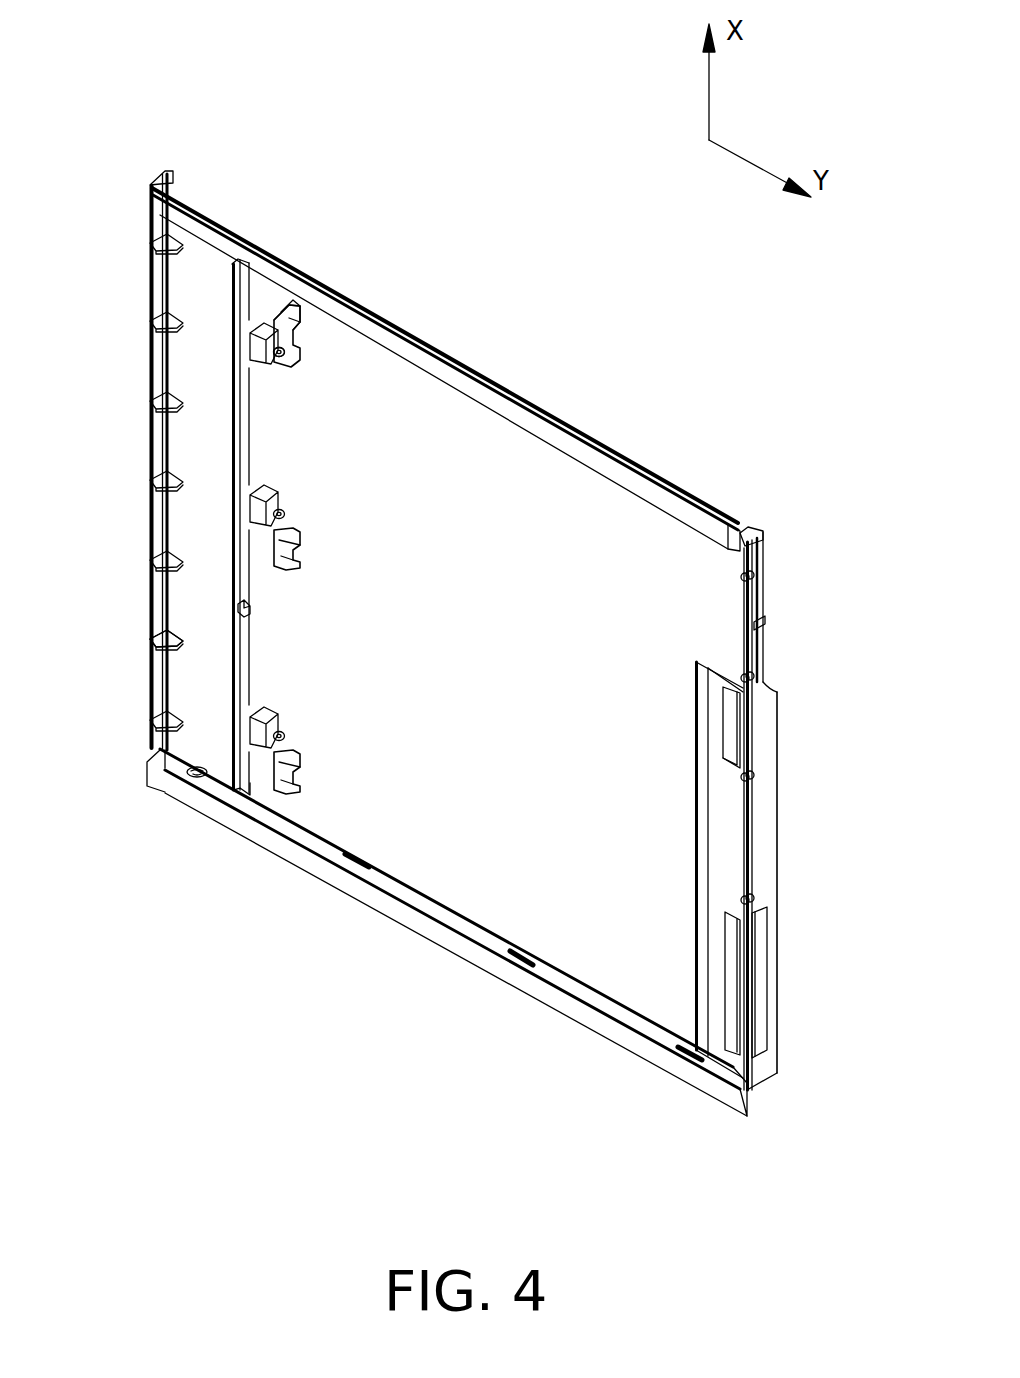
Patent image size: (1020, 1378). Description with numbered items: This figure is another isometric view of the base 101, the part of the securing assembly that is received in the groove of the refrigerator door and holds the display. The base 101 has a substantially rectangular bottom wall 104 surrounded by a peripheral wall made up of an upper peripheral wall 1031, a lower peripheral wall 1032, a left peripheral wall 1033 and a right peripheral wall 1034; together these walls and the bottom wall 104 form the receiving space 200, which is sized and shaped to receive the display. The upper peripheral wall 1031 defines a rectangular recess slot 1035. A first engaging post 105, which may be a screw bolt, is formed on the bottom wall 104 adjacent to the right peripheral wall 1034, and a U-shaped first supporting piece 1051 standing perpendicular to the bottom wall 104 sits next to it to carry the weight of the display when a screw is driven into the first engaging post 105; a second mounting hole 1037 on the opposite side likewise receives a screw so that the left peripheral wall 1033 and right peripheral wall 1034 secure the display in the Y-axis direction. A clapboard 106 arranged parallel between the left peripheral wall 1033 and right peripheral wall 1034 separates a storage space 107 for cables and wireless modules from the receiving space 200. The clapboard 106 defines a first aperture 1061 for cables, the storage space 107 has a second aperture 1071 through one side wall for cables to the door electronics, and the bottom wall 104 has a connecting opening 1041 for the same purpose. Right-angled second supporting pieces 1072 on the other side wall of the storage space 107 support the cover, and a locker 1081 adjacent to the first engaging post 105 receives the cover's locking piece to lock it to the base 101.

The base 101 is at (265, 57).
The bottom wall 104 is at (633, 527).
The first engaging post 105 is at (298, 358).
The clapboard 106 is at (233, 374).
The storage space 107 is at (200, 447).
The receiving space 200 is at (466, 428).
The upper peripheral wall 1031 is at (333, 873).
The lower peripheral wall 1032 is at (570, 437).
The left peripheral wall 1033 is at (762, 824).
The right peripheral wall 1034 is at (148, 518).
The slot 1035 is at (513, 958).
The second mounting hole 1037 is at (752, 577).
The connecting opening 1041 is at (735, 740).
The first supporting piece 1051 is at (263, 333).
The first aperture 1061 is at (238, 606).
The second aperture 1071 is at (150, 765).
The second supporting pieces 1072 is at (158, 640).
The locker 1081 is at (287, 302).